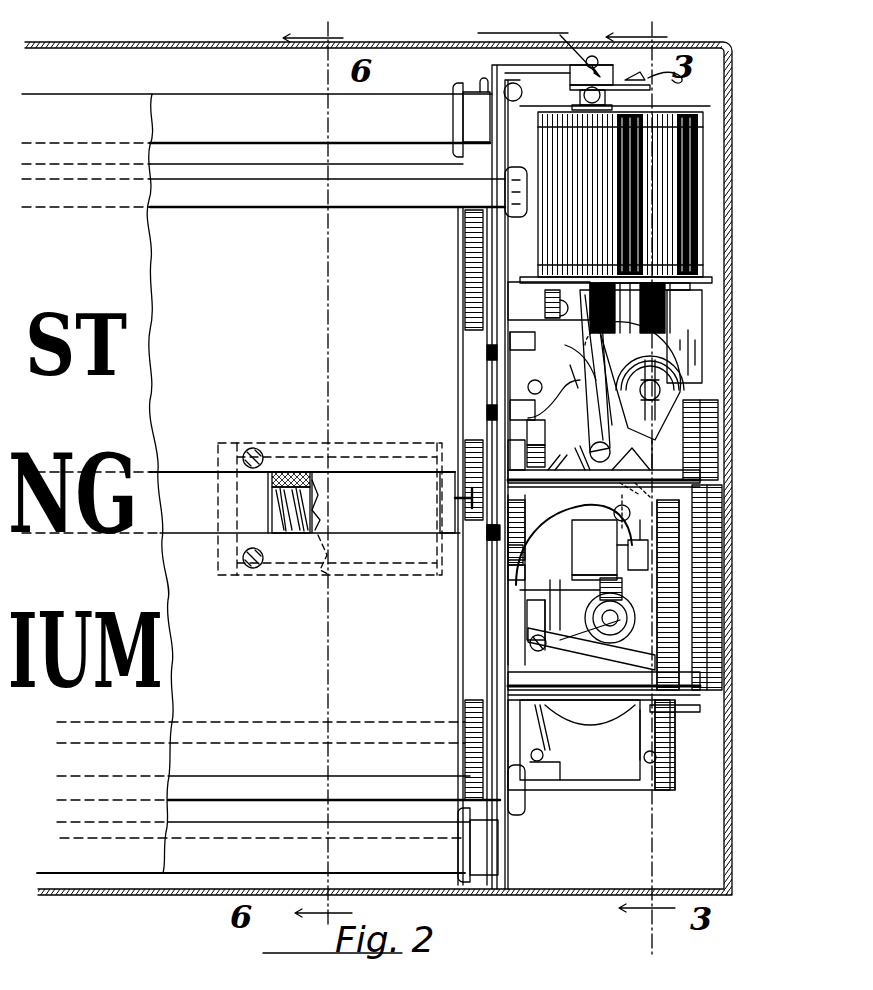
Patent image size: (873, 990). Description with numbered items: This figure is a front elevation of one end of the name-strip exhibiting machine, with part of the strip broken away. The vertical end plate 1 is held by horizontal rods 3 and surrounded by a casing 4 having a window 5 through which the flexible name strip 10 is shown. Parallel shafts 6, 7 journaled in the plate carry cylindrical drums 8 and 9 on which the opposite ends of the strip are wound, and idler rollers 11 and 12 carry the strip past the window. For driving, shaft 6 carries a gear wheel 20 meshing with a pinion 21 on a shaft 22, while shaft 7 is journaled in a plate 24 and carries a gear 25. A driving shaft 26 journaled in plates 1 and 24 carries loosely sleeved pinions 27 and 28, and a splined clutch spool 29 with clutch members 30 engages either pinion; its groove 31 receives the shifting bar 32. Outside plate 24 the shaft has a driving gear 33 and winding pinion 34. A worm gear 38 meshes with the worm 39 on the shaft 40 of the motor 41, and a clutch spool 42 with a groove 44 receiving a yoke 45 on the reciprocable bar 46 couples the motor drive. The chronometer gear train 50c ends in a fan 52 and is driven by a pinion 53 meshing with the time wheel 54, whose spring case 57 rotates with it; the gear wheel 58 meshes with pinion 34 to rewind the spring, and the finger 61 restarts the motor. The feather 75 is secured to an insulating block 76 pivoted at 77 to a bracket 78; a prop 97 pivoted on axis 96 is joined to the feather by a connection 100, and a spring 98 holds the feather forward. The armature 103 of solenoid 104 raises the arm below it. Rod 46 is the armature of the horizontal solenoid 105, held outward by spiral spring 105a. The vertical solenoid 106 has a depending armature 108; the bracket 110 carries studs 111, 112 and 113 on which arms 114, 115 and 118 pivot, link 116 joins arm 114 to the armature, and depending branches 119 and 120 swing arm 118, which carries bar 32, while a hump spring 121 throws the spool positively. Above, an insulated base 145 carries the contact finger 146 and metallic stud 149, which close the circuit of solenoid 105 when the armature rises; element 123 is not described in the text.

The end plate 1 is at (505, 250).
The horizontal rods 3 is at (416, 205).
The casing 4 is at (121, 48).
The window 5 is at (549, 457).
The shaft 6 is at (512, 318).
The shaft 7 is at (548, 740).
The drum 8 is at (191, 464).
The drum 9 is at (193, 533).
The name strip 10 is at (149, 252).
The idler roller 11 is at (400, 98).
The idler roller 12 is at (400, 873).
The gear wheel 20 is at (468, 312).
The pinion 21 is at (468, 446).
The shaft 22 is at (485, 535).
The plate 24 is at (682, 712).
The gear 25 is at (675, 758).
The driving shaft 26 is at (560, 605).
The pinion 27 is at (510, 575).
The pinion 28 is at (630, 616).
The clutch spool 29 is at (574, 545).
The clutch members 30 is at (565, 545).
The exterior groove 31 is at (613, 552).
The shifting bar 32 is at (625, 509).
The driving gear 33 is at (681, 595).
The winding pinion 34 is at (705, 587).
The worm gear 38 is at (605, 595).
The worm 39 is at (625, 622).
The motor shaft 40 is at (591, 649).
The motor 41 is at (590, 724).
The clutch spool 42 is at (590, 631).
The groove 44 is at (536, 625).
The yoke 45 is at (526, 580).
The reciprocable bar 46 is at (440, 500).
The gear train 50c is at (555, 300).
The vane or fan 52 is at (684, 336).
The pinion 53 is at (572, 380).
The time wheel 54 is at (579, 455).
The spring case 57 is at (649, 455).
The gear wheel 58 is at (693, 404).
The lateral projection or finger 61 is at (577, 451).
The feather 75 is at (522, 592).
The insulating block 76 is at (550, 745).
The pivot 77 is at (553, 771).
The bracket 78 is at (562, 790).
The axis 96 is at (645, 758).
The upright prop 97 is at (629, 735).
The spring 98 is at (545, 755).
The connection 100 is at (553, 647).
The armature 103 is at (647, 308).
The solenoid 104 is at (700, 132).
The horizontal solenoid 105 is at (291, 472).
The spiral spring 105a is at (300, 535).
The vertical solenoid 106 is at (548, 153).
The armature 108 is at (580, 277).
The bracket 110 is at (598, 371).
The stud 111 is at (601, 445).
The stud 112 is at (540, 378).
The stud 113 is at (633, 381).
The arm 114 is at (650, 398).
The arm 115 is at (554, 399).
The link 116 is at (599, 377).
The arm 118 is at (567, 347).
The depending branch 119 is at (646, 475).
The depending branch 120 is at (547, 450).
The hump spring 121 is at (508, 557).
The block 123 is at (530, 433).
The insulated base 145 is at (566, 84).
The flexible contact finger 146 is at (610, 101).
The metallic stud 149 is at (636, 78).